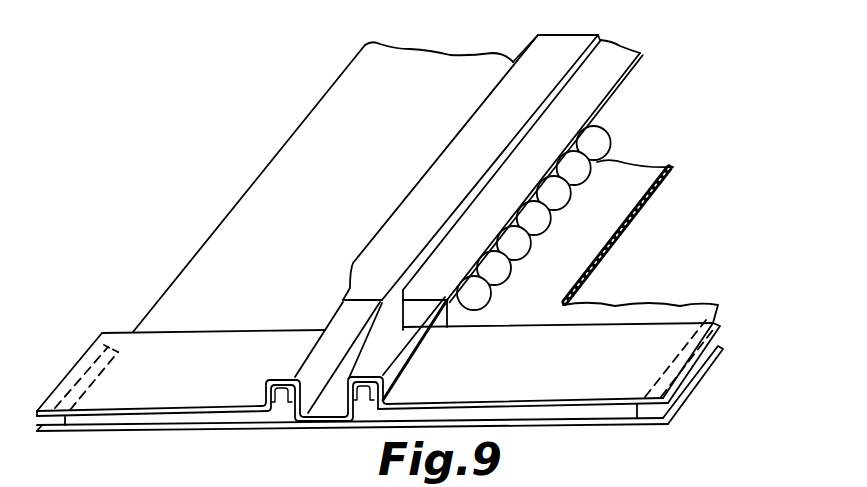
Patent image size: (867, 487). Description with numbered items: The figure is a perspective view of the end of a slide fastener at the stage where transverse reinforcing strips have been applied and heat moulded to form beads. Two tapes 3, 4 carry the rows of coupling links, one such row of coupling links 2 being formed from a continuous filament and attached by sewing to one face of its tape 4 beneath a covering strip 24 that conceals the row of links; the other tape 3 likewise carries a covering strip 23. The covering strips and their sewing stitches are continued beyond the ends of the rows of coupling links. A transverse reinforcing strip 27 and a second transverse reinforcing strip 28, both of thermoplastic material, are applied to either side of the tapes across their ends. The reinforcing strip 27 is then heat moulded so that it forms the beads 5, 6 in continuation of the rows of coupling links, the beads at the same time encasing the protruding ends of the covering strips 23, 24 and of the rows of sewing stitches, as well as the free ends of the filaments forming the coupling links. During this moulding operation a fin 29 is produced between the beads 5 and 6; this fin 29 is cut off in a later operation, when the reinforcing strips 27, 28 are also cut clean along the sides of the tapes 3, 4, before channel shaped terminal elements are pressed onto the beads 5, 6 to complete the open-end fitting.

The row of coupling links 2 is at (484, 292).
The tape 3 is at (152, 419).
The tape 4 is at (553, 415).
The bead 5 is at (326, 348).
The bead 6 is at (400, 334).
The covering strip 23 is at (266, 388).
The covering strip 24 is at (397, 390).
The transverse reinforcing strip 27 is at (174, 352).
The transverse reinforcing strip 28 is at (197, 430).
The fin 29 is at (332, 414).